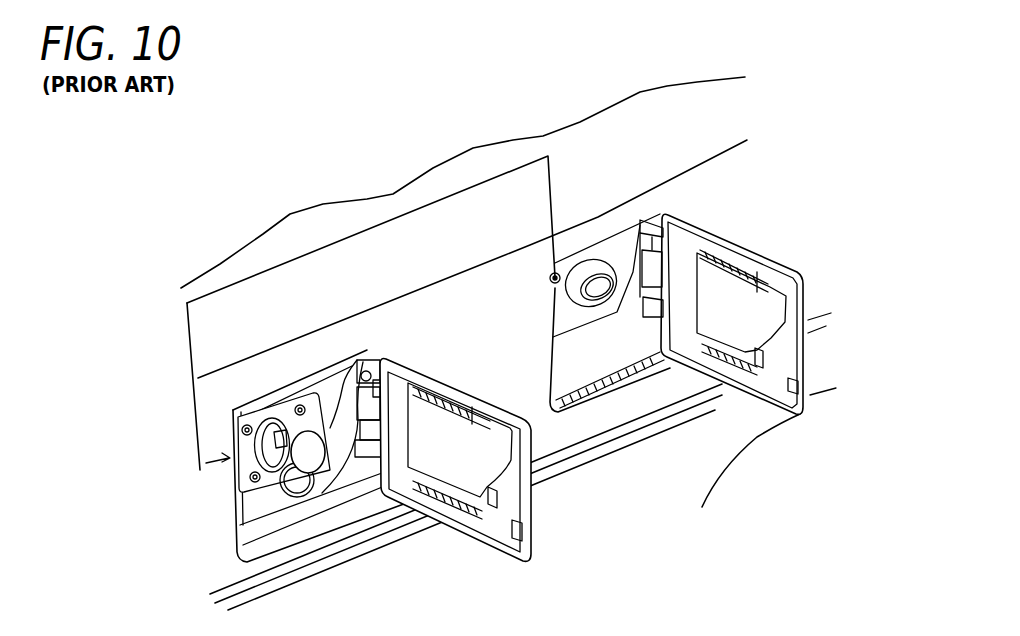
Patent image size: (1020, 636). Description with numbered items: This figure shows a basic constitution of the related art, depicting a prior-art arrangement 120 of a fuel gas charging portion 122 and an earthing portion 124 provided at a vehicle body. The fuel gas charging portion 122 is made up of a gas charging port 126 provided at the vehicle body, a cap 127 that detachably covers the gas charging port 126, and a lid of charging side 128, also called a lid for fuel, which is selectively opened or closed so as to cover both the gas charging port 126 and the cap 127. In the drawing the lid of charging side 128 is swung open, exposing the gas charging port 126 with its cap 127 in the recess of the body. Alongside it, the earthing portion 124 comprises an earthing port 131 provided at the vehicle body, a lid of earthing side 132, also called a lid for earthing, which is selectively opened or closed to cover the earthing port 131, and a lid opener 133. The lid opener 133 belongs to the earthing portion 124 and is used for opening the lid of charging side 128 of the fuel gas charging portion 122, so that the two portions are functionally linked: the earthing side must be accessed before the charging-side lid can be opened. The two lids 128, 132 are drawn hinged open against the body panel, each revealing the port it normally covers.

The prior art lamp mounting structure 120 is at (323, 126).
The fuel gas charging portion 122 is at (305, 377).
The earthing portion 124 is at (598, 214).
The gas charging port 126 is at (275, 420).
The cap 127 is at (316, 447).
The lid of charging side 128 is at (437, 380).
The earthing port 131 is at (600, 318).
The lid of earthing side 132 is at (730, 235).
The lid opener 133 is at (549, 281).